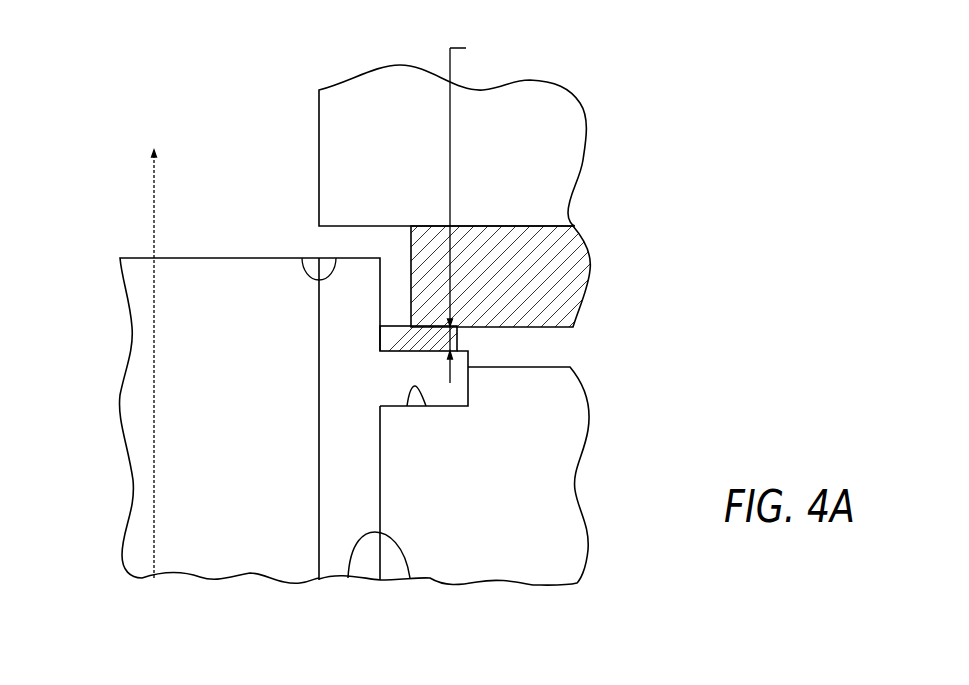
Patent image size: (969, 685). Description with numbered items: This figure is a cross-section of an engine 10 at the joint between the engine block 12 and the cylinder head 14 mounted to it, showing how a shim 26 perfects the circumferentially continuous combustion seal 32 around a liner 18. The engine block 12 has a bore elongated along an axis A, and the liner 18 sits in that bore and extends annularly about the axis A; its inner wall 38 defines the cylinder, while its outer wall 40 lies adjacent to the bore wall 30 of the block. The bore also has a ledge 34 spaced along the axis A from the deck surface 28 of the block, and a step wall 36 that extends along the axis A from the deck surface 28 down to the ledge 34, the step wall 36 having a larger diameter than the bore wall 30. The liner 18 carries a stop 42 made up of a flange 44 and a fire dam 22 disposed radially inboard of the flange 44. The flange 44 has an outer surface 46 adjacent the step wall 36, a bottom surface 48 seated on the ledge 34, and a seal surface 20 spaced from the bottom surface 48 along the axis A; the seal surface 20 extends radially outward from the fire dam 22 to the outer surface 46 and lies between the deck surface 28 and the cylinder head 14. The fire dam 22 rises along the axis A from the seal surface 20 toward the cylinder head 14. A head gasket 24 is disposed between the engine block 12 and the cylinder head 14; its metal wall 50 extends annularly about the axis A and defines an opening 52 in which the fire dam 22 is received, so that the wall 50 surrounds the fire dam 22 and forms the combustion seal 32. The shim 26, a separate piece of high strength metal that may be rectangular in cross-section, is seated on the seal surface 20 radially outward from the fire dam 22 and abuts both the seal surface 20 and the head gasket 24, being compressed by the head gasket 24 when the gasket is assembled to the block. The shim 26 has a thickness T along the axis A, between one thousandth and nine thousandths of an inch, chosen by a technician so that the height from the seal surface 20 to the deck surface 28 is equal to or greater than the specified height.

The engine 10 is at (727, 101).
The engine block 12 is at (557, 492).
The cylinder head 14 is at (557, 137).
The liner 18 is at (140, 243).
The seal surface 20 is at (400, 347).
The fire dam 22 is at (316, 280).
The head gasket 24 is at (558, 248).
The shim 26 is at (406, 361).
The deck surface 28 is at (550, 367).
The bore wall 30 is at (410, 578).
The circumferentially continuous combustion seal 32 is at (676, 260).
The ledge 34 is at (432, 362).
The step wall 36 is at (470, 388).
The inner wall 38 is at (318, 412).
The outer wall 40 is at (348, 578).
The stop 42 is at (248, 287).
The flange 44 is at (432, 362).
The outer surface 46 is at (470, 361).
The bottom surface 48 is at (426, 406).
The wall 50 is at (412, 256).
The opening 52 is at (387, 235).
The thickness T is at (468, 207).
The axis A is at (153, 350).